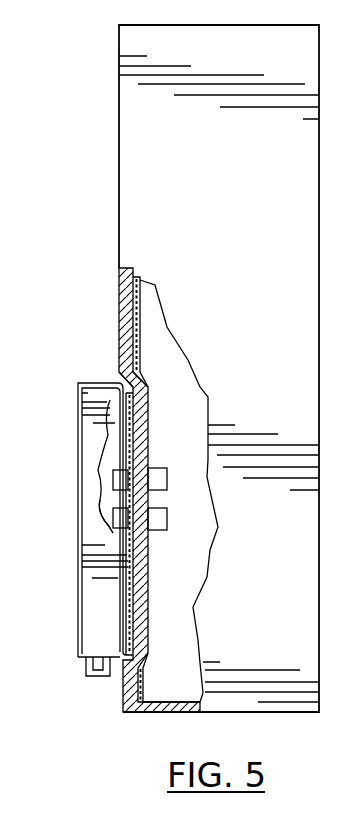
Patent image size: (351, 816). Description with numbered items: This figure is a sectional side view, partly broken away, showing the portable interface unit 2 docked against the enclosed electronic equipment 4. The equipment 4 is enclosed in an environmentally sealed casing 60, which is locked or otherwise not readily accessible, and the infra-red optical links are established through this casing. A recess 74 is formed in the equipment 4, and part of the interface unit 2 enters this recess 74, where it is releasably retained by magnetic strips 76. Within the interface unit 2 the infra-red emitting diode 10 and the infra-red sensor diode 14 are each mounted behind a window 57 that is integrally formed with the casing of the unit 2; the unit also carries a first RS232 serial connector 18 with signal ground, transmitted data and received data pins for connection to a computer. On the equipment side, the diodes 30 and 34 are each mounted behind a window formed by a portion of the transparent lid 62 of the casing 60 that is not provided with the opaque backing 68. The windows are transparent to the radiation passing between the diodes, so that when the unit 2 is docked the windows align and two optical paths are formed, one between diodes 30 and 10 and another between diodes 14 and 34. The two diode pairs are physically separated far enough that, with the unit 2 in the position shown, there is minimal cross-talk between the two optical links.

The interface unit 2 is at (66, 596).
The enclosed electronic equipment 4 is at (111, 150).
The infra-red emitting diode 10 is at (107, 473).
The infra-red sensor diode 14 is at (110, 515).
The first RS232 serial connector 18 is at (87, 668).
The diode 30 is at (167, 478).
The diode 34 is at (167, 518).
The window 57 is at (130, 470).
The casing 60 is at (114, 696).
The transparent lid 62 is at (118, 325).
The opaque backing 68 is at (143, 330).
The recess 74 is at (109, 368).
The magnetic strips 76 is at (133, 403).